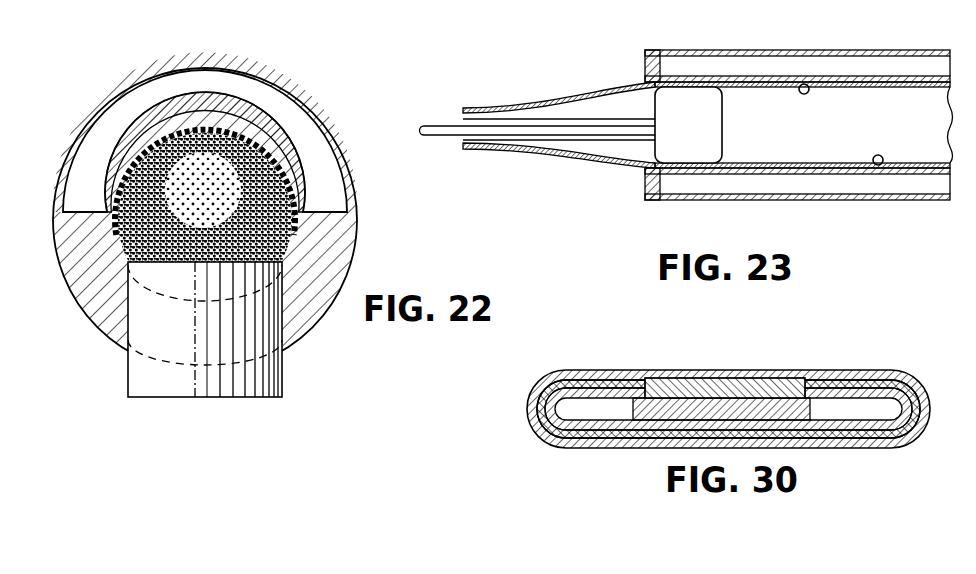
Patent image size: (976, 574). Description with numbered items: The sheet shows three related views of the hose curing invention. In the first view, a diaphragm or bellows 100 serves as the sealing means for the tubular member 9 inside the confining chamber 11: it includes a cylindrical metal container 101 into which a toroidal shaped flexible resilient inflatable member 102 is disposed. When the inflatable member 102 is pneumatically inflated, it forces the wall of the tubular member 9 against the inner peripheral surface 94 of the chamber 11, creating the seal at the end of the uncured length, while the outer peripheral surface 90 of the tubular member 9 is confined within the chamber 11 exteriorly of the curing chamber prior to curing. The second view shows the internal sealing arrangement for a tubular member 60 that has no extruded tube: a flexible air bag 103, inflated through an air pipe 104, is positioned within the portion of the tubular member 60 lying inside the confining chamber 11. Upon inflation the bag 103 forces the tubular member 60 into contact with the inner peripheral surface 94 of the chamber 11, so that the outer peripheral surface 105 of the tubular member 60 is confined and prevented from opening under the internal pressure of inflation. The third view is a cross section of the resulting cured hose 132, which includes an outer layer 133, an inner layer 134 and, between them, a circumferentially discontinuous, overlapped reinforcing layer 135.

In FIG. 22, the tubular member 9 is at (263, 151).
In FIG. 22, the confining chamber 11 is at (237, 69).
In FIG. 23, the confining chamber 11 is at (657, 50).
In FIG. 23, the tubular member 60 is at (514, 108).
In FIG. 22, the outer peripheral surface 90 is at (233, 127).
In FIG. 22, the inner peripheral surface 94 is at (170, 146).
In FIG. 23, the inner peripheral surface 94 is at (804, 84).
In FIG. 22, the diaphragm or bellows 100 is at (211, 333).
In FIG. 22, the cylindrical metal container 101 is at (272, 381).
In FIG. 22, the toroidal flexible resilient inflatable member 102 is at (273, 238).
In FIG. 23, the flexible air bag 103 is at (713, 119).
In FIG. 23, the air pipe 104 is at (553, 128).
In FIG. 23, the outer peripheral surface 105 is at (919, 163).
In FIG. 30, the cured hose 132 is at (661, 364).
In FIG. 30, the outer layer 133 is at (783, 371).
In FIG. 30, the inner layer 134 is at (826, 396).
In FIG. 30, the circumferentially discontinuous overlapped reinforcing layer 135 is at (856, 371).